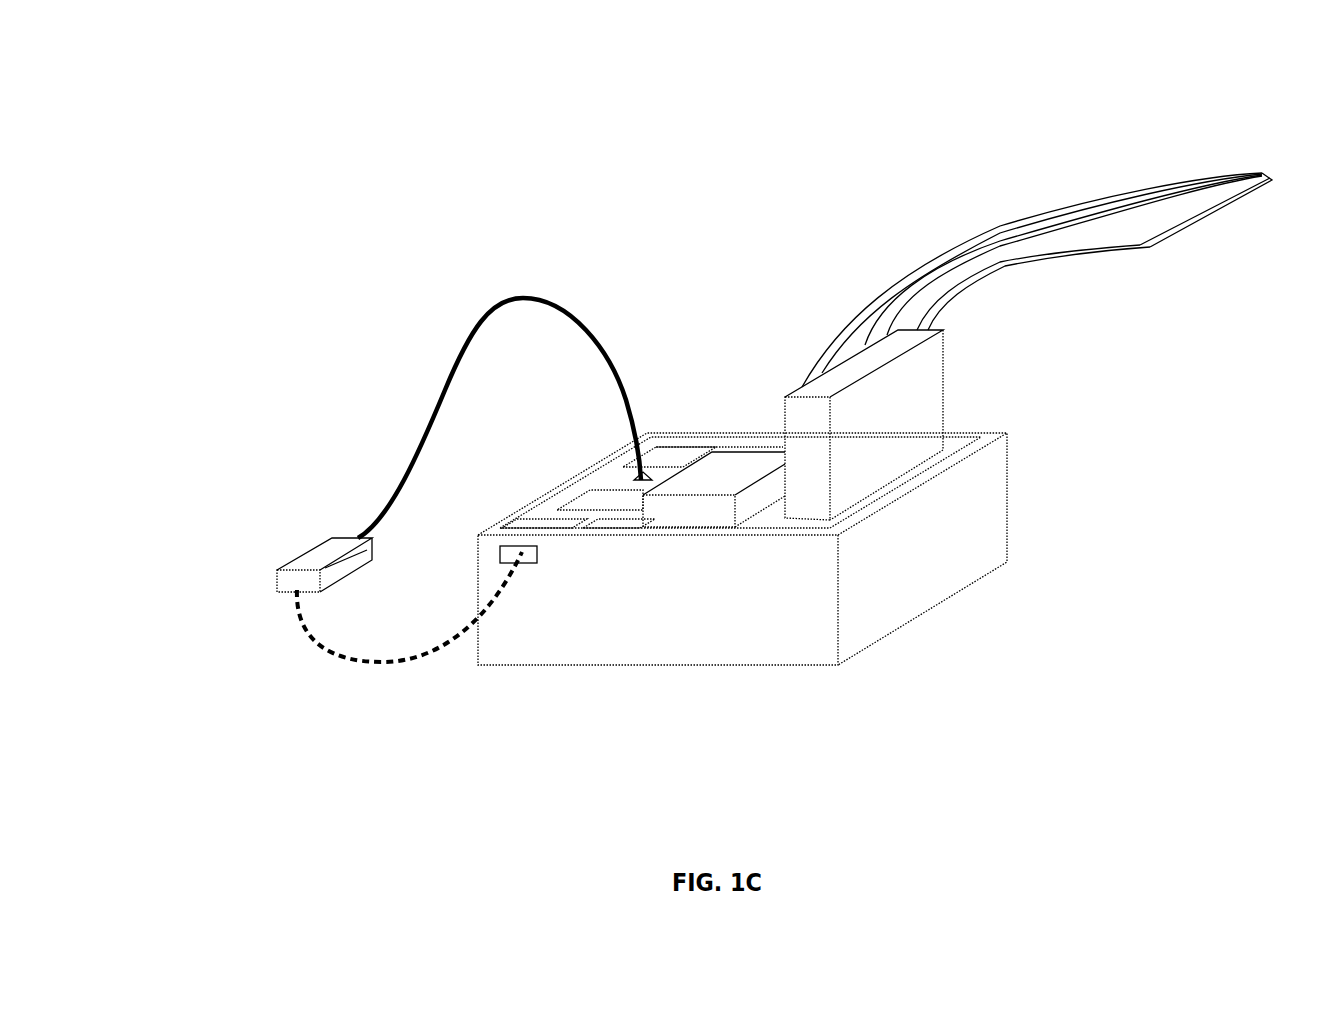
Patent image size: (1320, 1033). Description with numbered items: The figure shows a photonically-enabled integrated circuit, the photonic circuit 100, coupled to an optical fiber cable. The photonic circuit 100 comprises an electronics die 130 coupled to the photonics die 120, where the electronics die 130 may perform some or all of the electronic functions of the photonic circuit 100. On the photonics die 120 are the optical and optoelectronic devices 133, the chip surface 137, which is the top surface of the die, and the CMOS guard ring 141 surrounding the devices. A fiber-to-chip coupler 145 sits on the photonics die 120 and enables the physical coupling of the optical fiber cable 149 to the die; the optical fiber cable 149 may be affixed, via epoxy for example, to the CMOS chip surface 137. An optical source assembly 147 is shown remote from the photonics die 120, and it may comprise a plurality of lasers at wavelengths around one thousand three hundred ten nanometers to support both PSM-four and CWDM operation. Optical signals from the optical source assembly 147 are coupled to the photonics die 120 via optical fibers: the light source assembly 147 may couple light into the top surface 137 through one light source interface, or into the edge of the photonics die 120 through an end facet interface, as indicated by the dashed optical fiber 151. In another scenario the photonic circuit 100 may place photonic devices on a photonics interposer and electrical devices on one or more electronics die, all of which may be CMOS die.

The photonic circuit 100 is at (340, 123).
The photonics die 120 is at (705, 630).
The electronics die 130 is at (714, 517).
The optical and optoelectronic devices 133 is at (620, 507).
The chip surface 137 is at (603, 480).
The CMOS guard ring 141 is at (993, 435).
The fiber-to-chip coupler 145 is at (903, 421).
The optical source assembly 147 is at (319, 548).
The optical fiber cable 149 is at (1091, 200).
The dashed optical fiber 151 is at (504, 297).